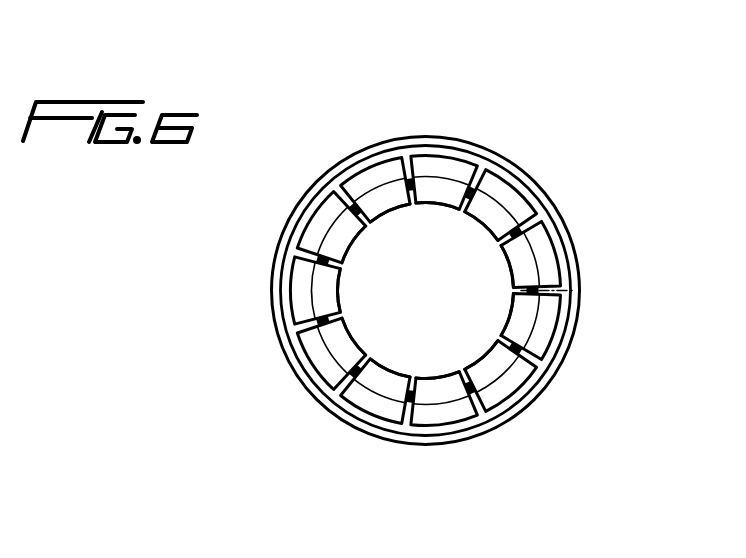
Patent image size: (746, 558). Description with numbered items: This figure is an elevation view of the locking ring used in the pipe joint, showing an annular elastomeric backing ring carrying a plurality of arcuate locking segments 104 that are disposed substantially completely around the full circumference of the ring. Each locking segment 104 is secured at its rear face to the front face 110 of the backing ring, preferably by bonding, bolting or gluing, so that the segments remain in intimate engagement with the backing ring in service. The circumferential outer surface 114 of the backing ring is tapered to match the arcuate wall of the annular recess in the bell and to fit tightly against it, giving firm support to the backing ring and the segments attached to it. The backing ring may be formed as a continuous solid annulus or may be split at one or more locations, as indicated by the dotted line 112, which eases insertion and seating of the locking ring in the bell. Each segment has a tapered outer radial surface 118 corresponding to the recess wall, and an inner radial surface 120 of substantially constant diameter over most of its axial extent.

The arcuate locking segments 104 is at (430, 188).
The front face of the backing ring 110 is at (340, 193).
The dotted line 112 is at (569, 290).
The outer surface of the backing ring 114 is at (507, 167).
The outer radial surface of the locking segment 118 is at (379, 172).
The inner radial surface of the locking segment 120 is at (392, 206).